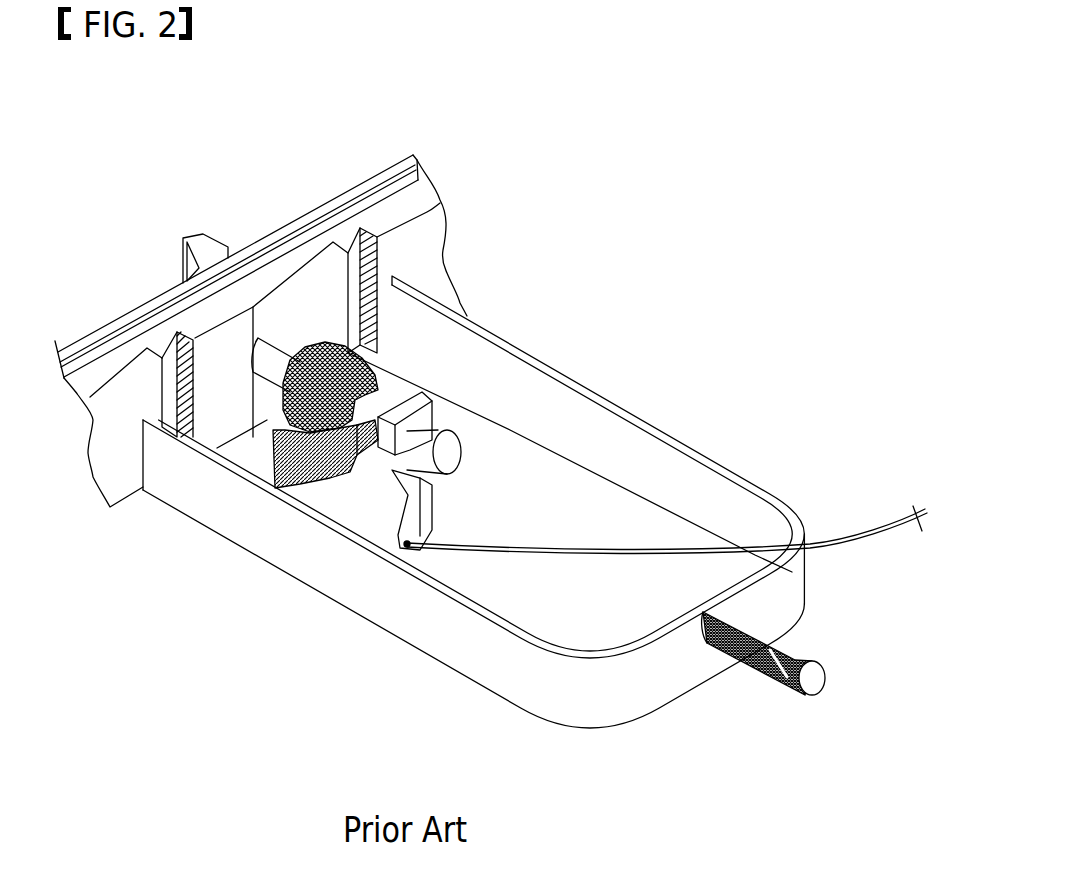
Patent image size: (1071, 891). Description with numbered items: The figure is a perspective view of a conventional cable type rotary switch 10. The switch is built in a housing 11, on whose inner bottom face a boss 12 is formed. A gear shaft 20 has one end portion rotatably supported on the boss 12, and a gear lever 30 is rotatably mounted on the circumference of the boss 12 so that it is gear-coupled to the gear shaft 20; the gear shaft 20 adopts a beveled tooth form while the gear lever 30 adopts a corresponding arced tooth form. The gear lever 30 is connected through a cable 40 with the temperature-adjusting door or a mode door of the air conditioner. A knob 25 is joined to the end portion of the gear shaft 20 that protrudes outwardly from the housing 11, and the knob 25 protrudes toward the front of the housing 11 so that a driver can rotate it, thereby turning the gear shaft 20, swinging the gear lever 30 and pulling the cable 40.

The cable type rotary switch 10 is at (211, 226).
The housing 11 is at (625, 404).
The boss 12 is at (442, 416).
The gear shaft 20 is at (460, 440).
The knob 25 is at (183, 240).
The gear lever 30 is at (321, 478).
The cable 40 is at (853, 536).